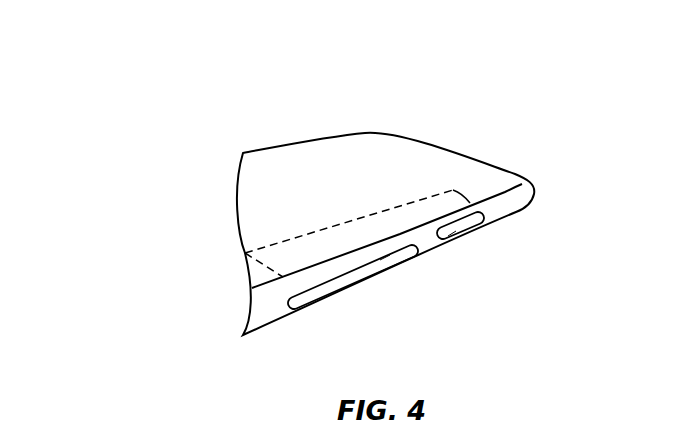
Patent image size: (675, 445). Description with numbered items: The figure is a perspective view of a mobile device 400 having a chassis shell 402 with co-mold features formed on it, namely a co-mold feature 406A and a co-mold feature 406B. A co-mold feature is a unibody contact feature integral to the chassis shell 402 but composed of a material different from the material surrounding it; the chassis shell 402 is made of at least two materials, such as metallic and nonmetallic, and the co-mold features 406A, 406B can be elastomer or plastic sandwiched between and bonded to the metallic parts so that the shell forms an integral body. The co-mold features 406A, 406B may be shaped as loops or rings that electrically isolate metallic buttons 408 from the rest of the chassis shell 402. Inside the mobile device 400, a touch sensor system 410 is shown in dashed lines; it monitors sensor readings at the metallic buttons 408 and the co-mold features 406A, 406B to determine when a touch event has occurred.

The mobile device 400 is at (82, 53).
The chassis shell 402 is at (522, 208).
The co-mold feature 406A is at (457, 238).
The co-mold feature 406B is at (320, 297).
The metallic buttons 408 is at (452, 234).
The touch sensor system 410 is at (462, 192).